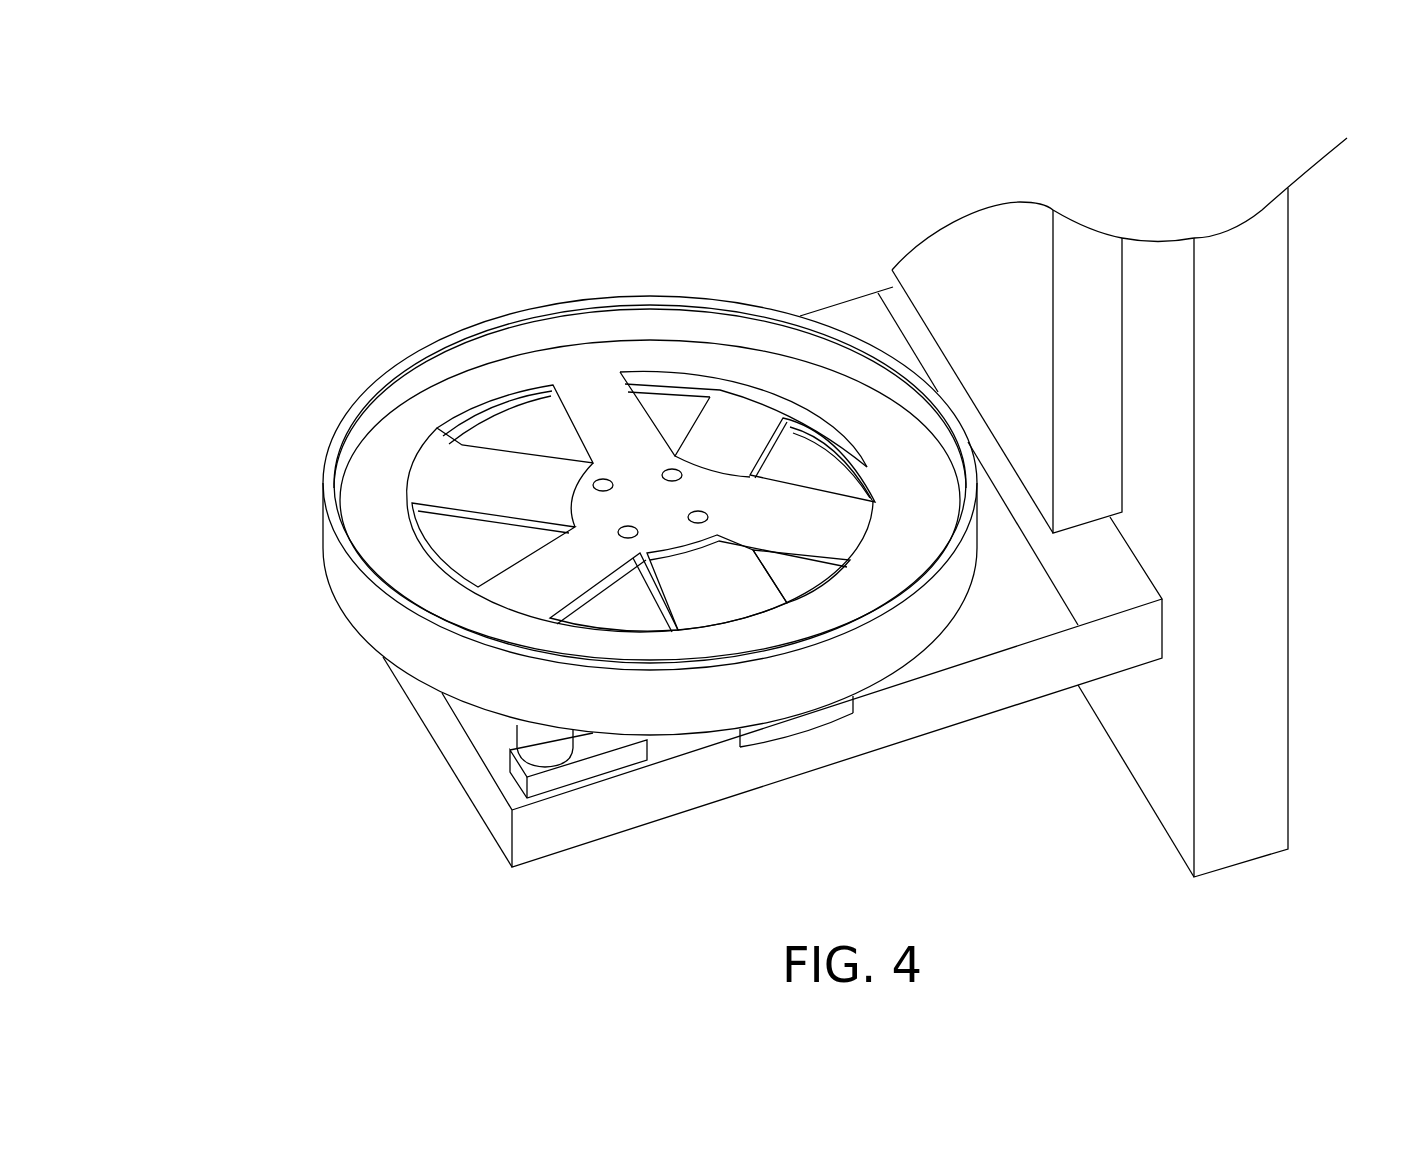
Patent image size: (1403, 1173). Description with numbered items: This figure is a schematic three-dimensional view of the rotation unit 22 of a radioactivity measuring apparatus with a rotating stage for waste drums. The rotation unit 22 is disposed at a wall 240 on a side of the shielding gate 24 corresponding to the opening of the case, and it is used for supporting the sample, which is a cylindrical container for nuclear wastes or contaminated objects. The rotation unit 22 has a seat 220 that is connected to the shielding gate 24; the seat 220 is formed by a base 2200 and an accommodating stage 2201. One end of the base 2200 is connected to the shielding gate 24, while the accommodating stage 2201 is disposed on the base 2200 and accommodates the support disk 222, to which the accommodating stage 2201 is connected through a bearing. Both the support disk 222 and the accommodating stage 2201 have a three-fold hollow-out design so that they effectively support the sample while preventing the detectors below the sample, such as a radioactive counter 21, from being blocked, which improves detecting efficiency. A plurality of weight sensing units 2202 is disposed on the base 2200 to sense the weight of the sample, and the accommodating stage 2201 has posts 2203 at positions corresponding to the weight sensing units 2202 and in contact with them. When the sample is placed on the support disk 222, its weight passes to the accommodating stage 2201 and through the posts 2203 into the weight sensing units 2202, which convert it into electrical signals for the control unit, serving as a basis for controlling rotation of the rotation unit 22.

The rotation unit 22 is at (268, 155).
The seat 220 is at (830, 318).
The accommodating stage 2201 is at (370, 615).
The support disk 222 is at (478, 385).
The base 2200 is at (497, 813).
The weight sensing unit 2202 is at (593, 772).
The post 2203 is at (532, 748).
The radioactive counter 21 is at (1012, 242).
The shielding gate 24 is at (1240, 692).
The wall 240 is at (1132, 733).